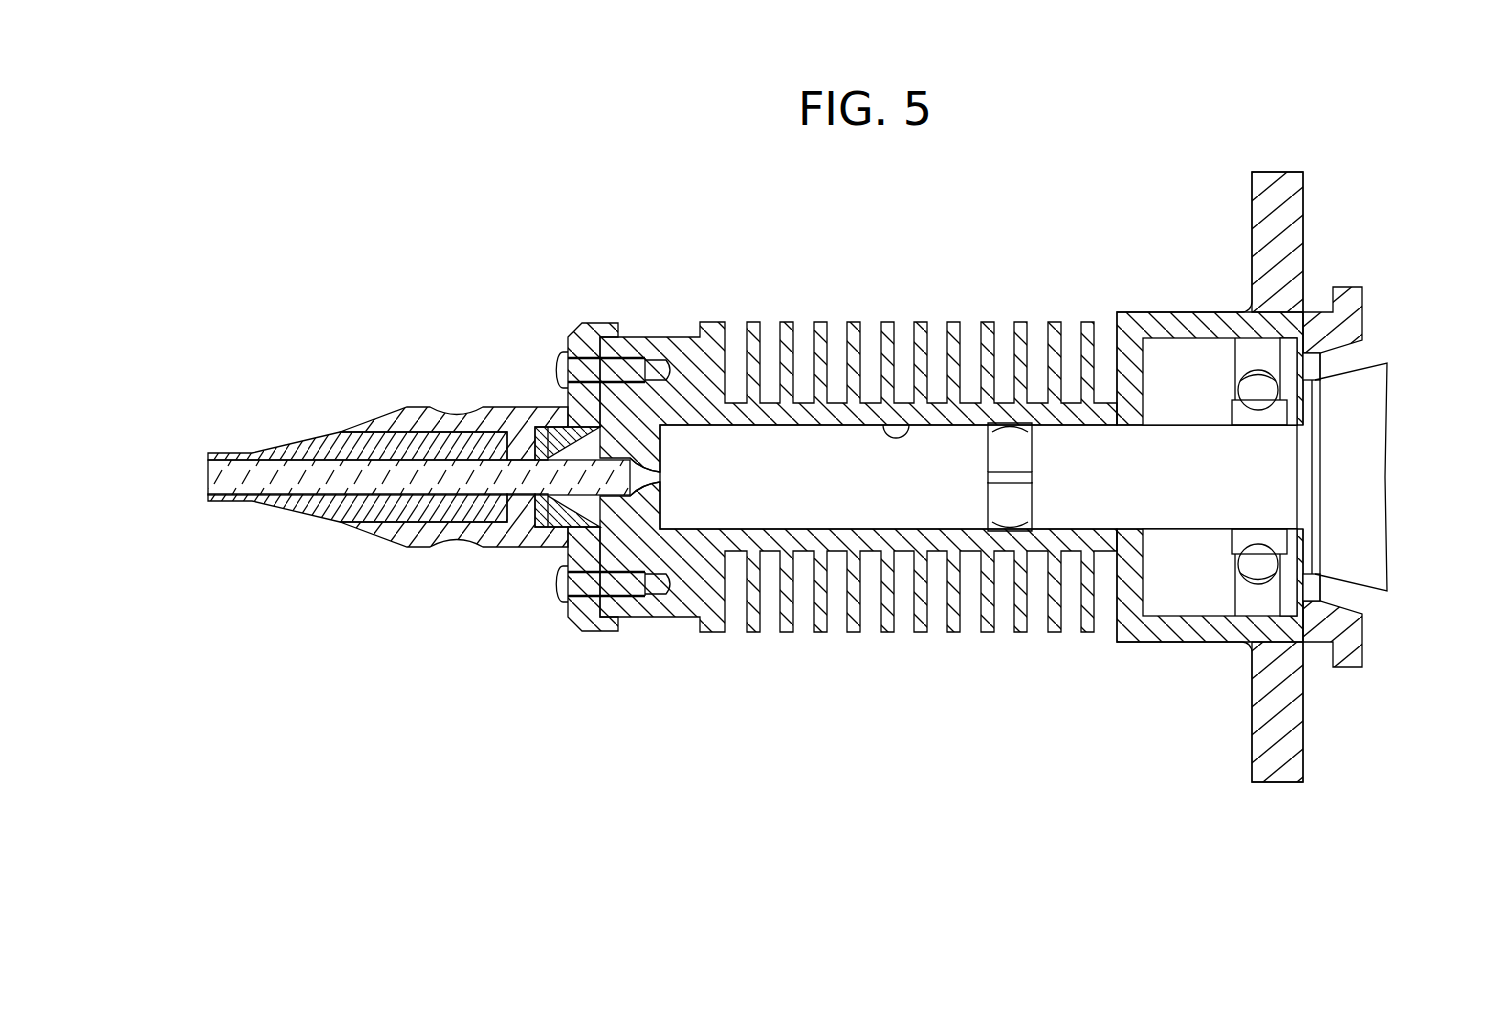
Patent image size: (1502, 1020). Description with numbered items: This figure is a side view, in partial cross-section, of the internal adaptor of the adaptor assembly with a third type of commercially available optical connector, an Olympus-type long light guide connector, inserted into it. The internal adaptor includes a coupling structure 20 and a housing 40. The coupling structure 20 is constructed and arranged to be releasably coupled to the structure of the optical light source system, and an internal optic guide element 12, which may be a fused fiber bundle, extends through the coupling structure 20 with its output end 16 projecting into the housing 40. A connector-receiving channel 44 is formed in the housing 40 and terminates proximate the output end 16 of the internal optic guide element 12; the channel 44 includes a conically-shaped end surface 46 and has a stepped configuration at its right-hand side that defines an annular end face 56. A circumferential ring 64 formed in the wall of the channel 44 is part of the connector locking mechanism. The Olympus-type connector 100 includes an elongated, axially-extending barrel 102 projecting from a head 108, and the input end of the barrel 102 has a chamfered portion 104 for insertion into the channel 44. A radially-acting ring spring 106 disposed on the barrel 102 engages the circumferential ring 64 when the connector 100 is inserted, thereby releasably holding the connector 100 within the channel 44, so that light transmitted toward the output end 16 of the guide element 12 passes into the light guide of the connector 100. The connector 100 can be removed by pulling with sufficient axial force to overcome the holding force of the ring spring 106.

The internal optic guide element 12 is at (208, 483).
The coupling structure 20 is at (372, 412).
The output end 16 is at (655, 470).
The conically-shaped end surface 46 is at (655, 507).
The housing 40 is at (820, 322).
The chamfered portion 104 is at (672, 447).
The connector-receiving channel 44 is at (894, 415).
The barrel 102 is at (770, 495).
The ring spring 106 is at (1011, 445).
The circumferential ring 64 is at (1012, 530).
The Olympus-type connector 100 is at (1372, 360).
The annular end face 56 is at (1302, 578).
The head 108 is at (1370, 400).